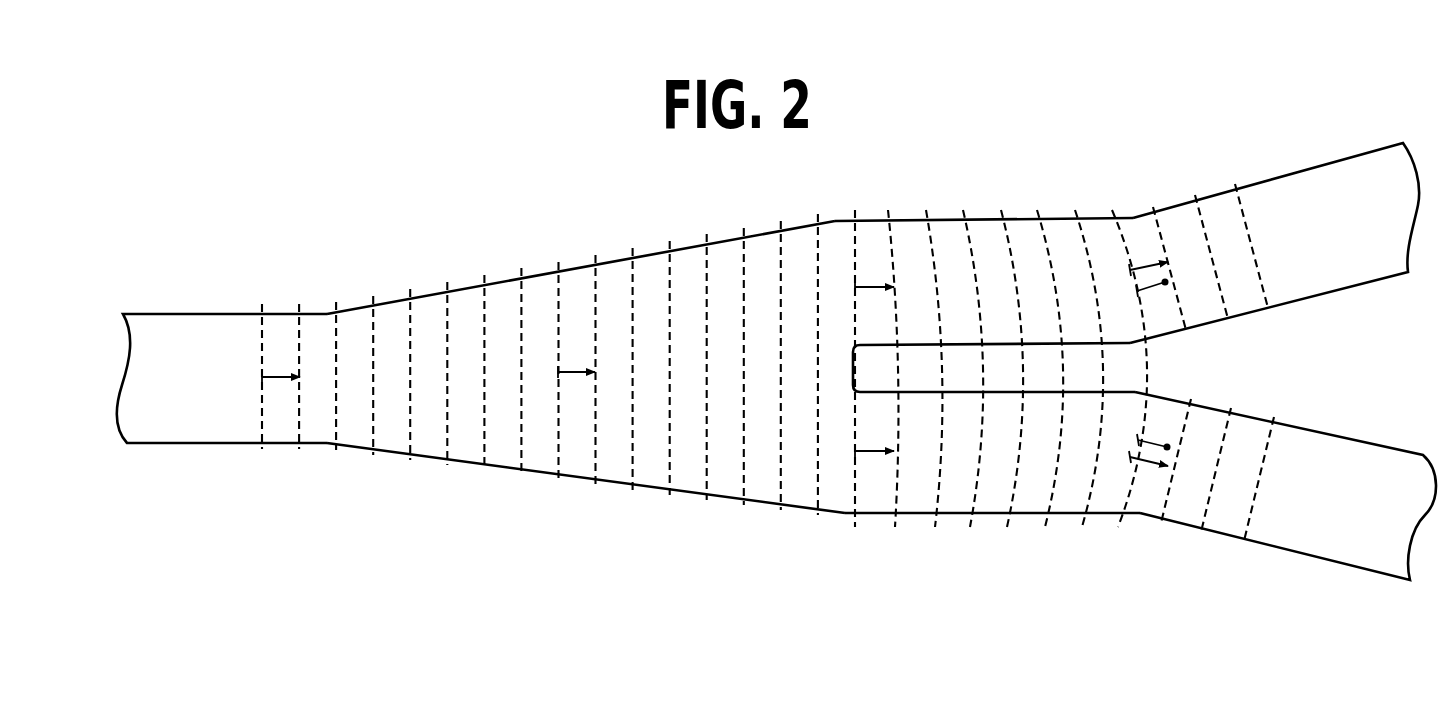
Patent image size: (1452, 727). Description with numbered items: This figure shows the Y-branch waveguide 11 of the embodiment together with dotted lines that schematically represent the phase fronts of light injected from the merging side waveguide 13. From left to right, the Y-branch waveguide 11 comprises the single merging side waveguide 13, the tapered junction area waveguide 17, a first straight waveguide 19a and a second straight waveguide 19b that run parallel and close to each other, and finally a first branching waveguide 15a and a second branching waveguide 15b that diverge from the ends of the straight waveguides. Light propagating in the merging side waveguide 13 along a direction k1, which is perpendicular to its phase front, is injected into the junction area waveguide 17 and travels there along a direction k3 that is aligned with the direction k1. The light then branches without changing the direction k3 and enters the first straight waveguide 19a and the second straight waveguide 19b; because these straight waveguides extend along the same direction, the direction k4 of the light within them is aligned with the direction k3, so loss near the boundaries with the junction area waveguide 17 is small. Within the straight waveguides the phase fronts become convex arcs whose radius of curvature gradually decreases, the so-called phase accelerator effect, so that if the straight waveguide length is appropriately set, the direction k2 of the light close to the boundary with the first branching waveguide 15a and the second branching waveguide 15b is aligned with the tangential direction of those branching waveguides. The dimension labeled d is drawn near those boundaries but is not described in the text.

The Y-branch waveguide 11 is at (496, 210).
The merging side waveguide 13 is at (183, 434).
The first branching waveguide 15a is at (1302, 190).
The second branching waveguide 15b is at (1318, 537).
The junction area waveguide 17 is at (503, 445).
The first straight waveguide 19a is at (990, 237).
The second straight waveguide 19b is at (1020, 497).
The direction of propagating light of the merging side waveguide k1 is at (265, 377).
The direction of propagating light close to the boundary of the straight waveguides k2 is at (1143, 268).
The direction of propagating light of the junction area waveguide k3 is at (560, 373).
The direction of propagating light of the first and second straight waveguides k4 is at (873, 287).
The offset distance d is at (1148, 287).